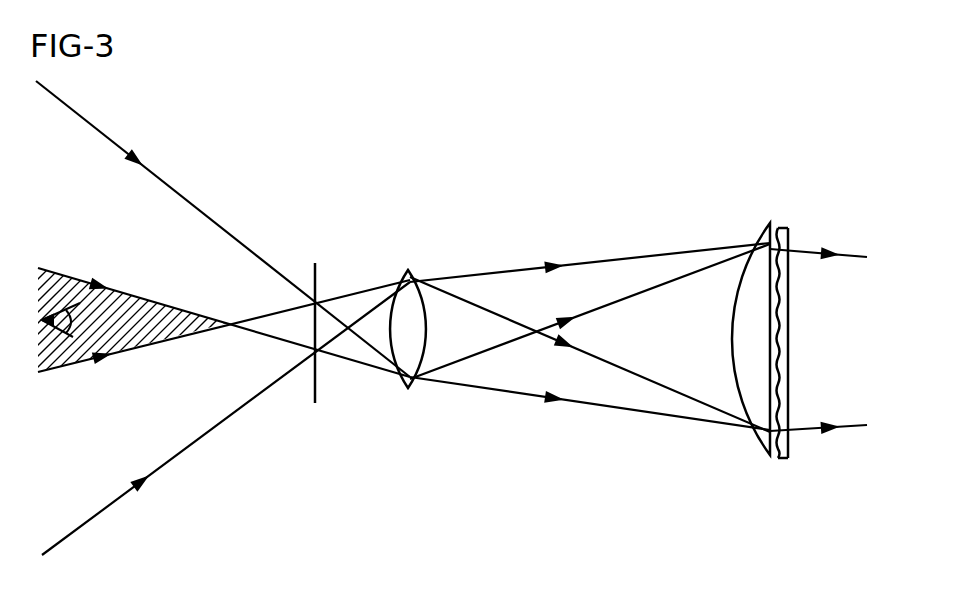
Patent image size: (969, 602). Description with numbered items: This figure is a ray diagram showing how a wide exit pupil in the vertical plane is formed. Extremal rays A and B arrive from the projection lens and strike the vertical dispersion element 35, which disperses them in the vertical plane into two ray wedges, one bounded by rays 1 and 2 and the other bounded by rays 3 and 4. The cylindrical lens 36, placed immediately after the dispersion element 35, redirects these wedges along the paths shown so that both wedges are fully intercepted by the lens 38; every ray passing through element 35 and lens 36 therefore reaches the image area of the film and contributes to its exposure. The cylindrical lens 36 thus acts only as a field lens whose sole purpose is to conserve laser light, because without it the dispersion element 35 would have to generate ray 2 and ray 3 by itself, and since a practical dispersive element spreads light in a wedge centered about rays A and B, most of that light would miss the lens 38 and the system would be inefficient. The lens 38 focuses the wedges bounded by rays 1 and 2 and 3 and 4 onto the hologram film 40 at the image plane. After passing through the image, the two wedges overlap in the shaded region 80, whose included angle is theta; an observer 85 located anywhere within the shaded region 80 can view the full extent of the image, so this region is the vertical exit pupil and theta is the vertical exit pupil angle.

The vertical dispersion element 35 is at (785, 228).
The cylindrical lens 36 is at (766, 242).
The lens 38 is at (410, 272).
The hologram film 40 is at (318, 310).
The shaded region 80 is at (44, 345).
The observer 85 is at (42, 320).
The ray 1 is at (406, 393).
The ray 2 is at (404, 311).
The ray 3 is at (404, 354).
The ray 4 is at (403, 255).
The extremal ray A is at (828, 261).
The extremal ray B is at (828, 430).